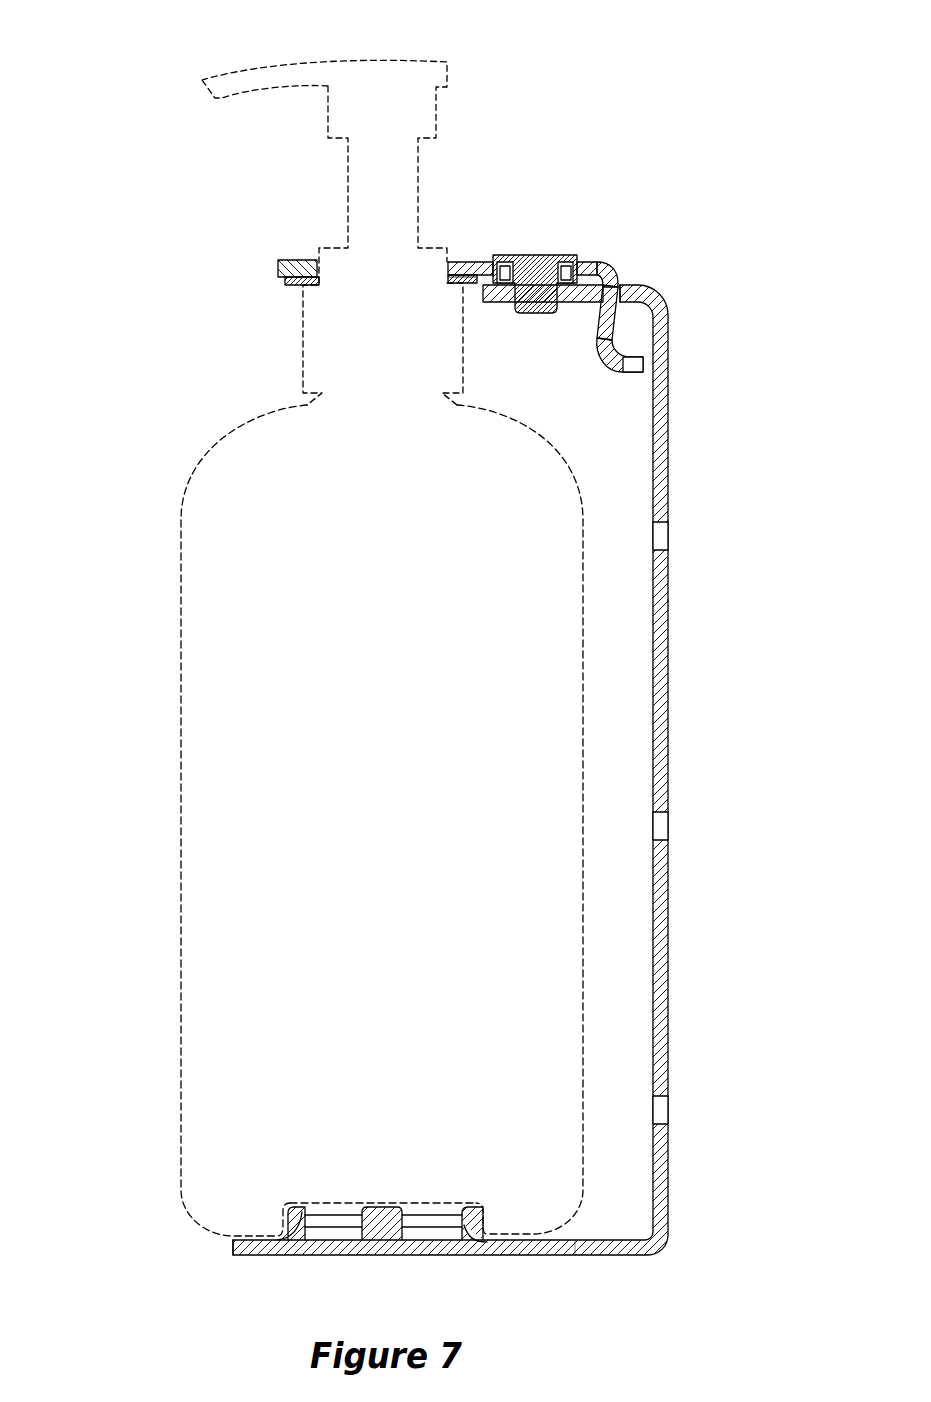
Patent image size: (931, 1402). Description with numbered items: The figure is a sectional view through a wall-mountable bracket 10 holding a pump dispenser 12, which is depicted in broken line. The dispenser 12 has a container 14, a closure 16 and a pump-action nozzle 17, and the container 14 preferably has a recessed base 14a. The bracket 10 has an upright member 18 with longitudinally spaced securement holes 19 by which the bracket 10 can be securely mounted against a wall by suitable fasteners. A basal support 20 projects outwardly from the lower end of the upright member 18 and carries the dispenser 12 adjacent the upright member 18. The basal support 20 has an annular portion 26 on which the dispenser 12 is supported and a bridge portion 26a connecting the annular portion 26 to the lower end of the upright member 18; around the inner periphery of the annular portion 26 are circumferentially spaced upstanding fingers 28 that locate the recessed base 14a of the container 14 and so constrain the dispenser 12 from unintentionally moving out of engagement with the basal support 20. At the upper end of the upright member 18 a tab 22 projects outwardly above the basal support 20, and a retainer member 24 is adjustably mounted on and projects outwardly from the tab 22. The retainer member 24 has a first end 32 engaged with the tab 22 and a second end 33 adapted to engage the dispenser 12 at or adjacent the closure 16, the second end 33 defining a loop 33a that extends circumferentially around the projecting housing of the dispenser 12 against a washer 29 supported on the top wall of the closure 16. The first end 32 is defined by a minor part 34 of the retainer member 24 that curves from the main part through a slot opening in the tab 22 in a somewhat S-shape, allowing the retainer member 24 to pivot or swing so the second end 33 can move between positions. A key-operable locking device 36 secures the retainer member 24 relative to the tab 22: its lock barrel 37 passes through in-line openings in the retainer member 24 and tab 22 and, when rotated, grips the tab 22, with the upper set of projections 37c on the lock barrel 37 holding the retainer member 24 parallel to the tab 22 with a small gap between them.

The wall-mountable bracket 10 is at (765, 152).
The pump dispenser 12 is at (130, 773).
The container 14 is at (180, 848).
The recessed base 14a is at (437, 1210).
The closure 16 is at (282, 330).
The pump-action nozzle 17 is at (388, 62).
The upright member 18 is at (662, 681).
The securement holes 19 is at (662, 537).
The basal support 20 is at (318, 1257).
The tab 22 is at (582, 304).
The retainer member 24 is at (472, 257).
The annular portion 26 is at (242, 1252).
The bridge portion 26a is at (578, 1250).
The upstanding fingers 28 is at (465, 1205).
The washer 29 is at (464, 288).
The first end 32 is at (635, 365).
The second end 33 is at (275, 262).
The loop 33a is at (452, 268).
The minor part 34 is at (608, 323).
The key-operable locking device 36 is at (517, 252).
The lock barrel 37 is at (540, 255).
The upper projections 37c is at (600, 278).